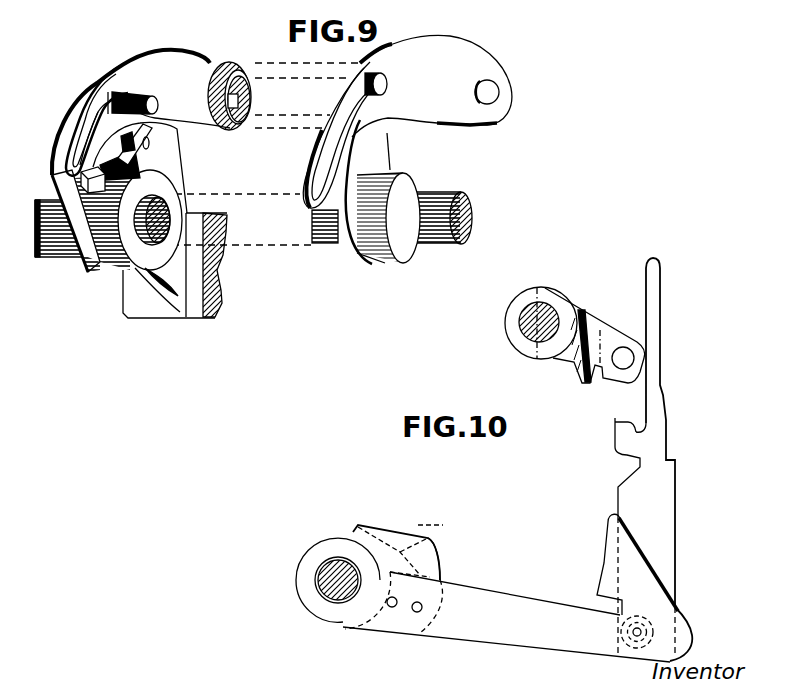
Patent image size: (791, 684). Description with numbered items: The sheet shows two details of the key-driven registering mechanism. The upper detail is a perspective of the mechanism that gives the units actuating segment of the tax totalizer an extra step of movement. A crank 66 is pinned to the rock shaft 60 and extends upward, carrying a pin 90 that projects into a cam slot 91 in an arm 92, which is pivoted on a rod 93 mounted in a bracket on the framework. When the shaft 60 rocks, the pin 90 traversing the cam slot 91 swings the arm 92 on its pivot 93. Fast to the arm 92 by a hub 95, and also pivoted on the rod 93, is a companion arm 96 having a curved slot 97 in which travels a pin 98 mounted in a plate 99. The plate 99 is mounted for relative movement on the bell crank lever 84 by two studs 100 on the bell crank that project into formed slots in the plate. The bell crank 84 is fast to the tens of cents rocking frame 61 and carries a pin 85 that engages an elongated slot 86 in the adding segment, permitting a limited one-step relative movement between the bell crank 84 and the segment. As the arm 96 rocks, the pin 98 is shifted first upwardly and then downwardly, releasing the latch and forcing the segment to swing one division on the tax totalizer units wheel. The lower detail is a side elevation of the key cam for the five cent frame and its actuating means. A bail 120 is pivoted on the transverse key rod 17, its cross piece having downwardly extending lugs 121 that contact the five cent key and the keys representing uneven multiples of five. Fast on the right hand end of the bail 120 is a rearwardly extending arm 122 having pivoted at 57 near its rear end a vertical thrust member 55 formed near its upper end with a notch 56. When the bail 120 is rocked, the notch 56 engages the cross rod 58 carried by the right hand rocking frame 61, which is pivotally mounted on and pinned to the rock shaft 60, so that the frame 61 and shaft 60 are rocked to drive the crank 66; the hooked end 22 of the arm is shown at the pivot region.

In FIG. 10, the transverse rod 17 is at (332, 572).
In FIG. 10, the arm end 22 is at (600, 599).
In FIG. 10, the thrust member 55 is at (642, 495).
In FIG. 10, the notch 56 is at (615, 420).
In FIG. 10, the pivotal point 57 is at (634, 637).
In FIG. 10, the cross rod 58 is at (620, 362).
In FIG. 9, the rock shaft 60 is at (49, 256).
In FIG. 10, the rock shaft 60 is at (520, 327).
In FIG. 9, the rocking frame 61 is at (190, 303).
In FIG. 10, the rocking frame 61 is at (591, 328).
In FIG. 9, the crank 66 is at (380, 153).
In FIG. 9, the bell crank lever 84 is at (163, 138).
In FIG. 9, the pin 85 is at (80, 178).
In FIG. 9, the slot 86 is at (83, 238).
In FIG. 9, the pin 90 is at (384, 79).
In FIG. 9, the cam slot 91 is at (332, 145).
In FIG. 9, the arm 92 is at (452, 47).
In FIG. 9, the rod 93 is at (252, 95).
In FIG. 9, the hub 95 is at (229, 65).
In FIG. 9, the arm 96 is at (145, 60).
In FIG. 9, the curved slot 97 is at (93, 110).
In FIG. 9, the pin 98 is at (155, 107).
In FIG. 9, the plate 99 is at (118, 94).
In FIG. 9, the studs 100 is at (125, 142).
In FIG. 10, the bail 120 is at (412, 514).
In FIG. 10, the lugs 121 is at (433, 570).
In FIG. 10, the arm 122 is at (468, 602).